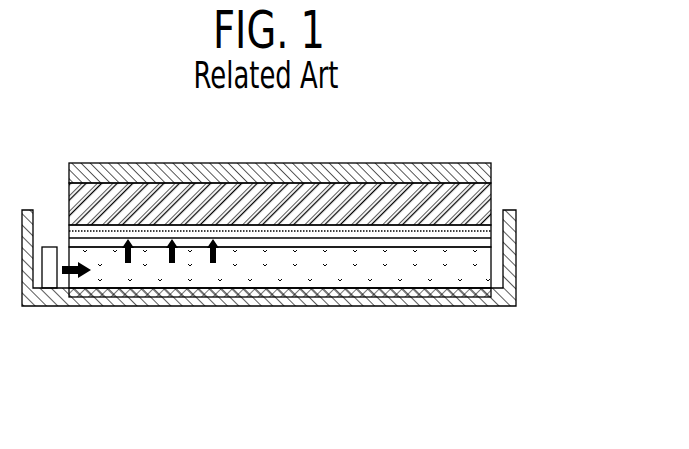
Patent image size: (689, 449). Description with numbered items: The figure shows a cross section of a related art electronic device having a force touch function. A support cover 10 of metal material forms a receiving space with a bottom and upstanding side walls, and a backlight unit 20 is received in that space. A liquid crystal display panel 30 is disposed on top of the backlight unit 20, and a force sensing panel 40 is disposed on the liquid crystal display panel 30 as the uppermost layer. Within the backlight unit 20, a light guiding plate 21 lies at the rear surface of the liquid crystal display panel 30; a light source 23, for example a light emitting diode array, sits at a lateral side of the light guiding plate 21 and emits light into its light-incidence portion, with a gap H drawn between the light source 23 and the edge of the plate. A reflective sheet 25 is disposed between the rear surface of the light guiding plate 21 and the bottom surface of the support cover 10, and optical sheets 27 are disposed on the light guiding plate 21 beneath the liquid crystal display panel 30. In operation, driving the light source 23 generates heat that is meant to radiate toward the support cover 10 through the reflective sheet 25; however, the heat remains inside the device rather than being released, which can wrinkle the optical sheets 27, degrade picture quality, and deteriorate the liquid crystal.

The support cover 10 is at (508, 265).
The backlight unit 20 is at (287, 382).
The light guiding plate 21 is at (240, 262).
The light source 23 is at (45, 290).
The reflective sheet 25 is at (177, 290).
The optical sheets 27 is at (302, 228).
The liquid crystal display panel 30 is at (485, 208).
The force sensing panel 40 is at (485, 173).
The gap distance H is at (63, 290).